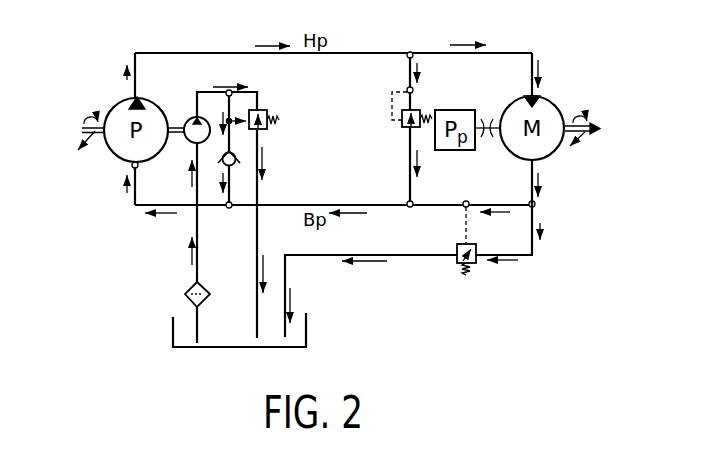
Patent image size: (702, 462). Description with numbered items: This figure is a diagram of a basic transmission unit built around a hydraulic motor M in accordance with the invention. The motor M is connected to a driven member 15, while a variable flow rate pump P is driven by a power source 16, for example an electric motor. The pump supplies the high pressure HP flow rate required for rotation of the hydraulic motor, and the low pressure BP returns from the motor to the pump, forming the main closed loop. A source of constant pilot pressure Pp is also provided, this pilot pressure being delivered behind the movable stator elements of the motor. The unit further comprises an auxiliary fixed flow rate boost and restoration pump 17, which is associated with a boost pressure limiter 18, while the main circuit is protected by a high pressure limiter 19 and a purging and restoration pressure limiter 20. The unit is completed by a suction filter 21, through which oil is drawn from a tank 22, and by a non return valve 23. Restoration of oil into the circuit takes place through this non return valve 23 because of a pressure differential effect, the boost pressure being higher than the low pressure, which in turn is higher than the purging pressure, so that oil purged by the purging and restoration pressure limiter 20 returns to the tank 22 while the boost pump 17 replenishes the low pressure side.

The driven member 15 is at (587, 136).
The power source 16 is at (94, 126).
The auxiliary fixed flow rate boost and restoration pump 17 is at (190, 136).
The boost pressure limiter 18 is at (265, 112).
The high pressure limiter 19 is at (413, 110).
The purging and restoration pressure limiter 20 is at (475, 250).
The suction filter 21 is at (186, 292).
The tank 22 is at (307, 330).
The non return valve 23 is at (238, 148).